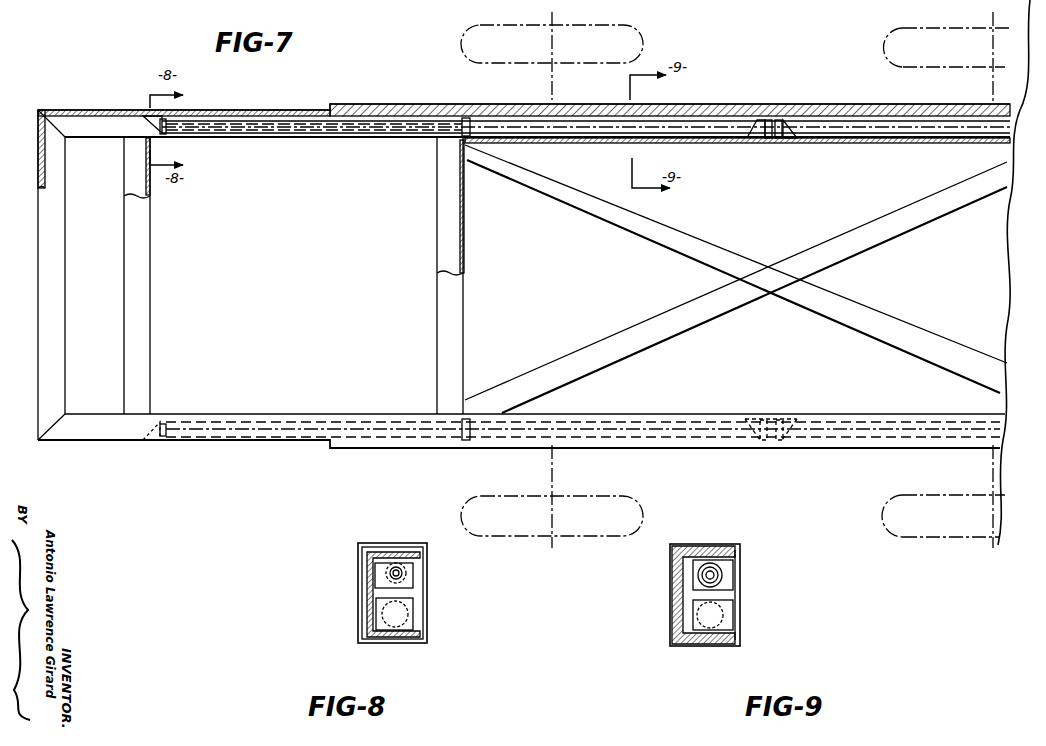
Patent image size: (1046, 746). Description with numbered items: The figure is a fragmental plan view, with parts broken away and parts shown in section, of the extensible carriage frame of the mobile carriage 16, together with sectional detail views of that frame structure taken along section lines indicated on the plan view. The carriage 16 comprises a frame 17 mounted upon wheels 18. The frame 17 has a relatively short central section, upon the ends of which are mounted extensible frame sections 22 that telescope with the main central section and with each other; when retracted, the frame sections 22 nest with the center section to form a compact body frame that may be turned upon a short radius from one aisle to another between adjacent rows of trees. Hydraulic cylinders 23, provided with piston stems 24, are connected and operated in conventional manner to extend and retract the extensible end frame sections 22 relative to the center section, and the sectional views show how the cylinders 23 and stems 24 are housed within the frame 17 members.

In FIG. 7, the mobile carriage 16 is at (789, 94).
In FIG. 7, the frame 17 is at (426, 444).
In FIG. 8, the frame 17 is at (358, 564).
In FIG. 9, the frame 17 is at (670, 593).
In FIG. 7, the wheels 18 is at (464, 50).
In FIG. 7, the extensible frame sections 22 is at (276, 442).
In FIG. 8, the extensible frame sections 22 is at (367, 588).
In FIG. 9, the extensible frame sections 22 is at (683, 620).
In FIG. 7, the hydraulic cylinders 23 is at (876, 127).
In FIG. 8, the hydraulic cylinders 23 is at (412, 575).
In FIG. 9, the hydraulic cylinders 23 is at (722, 580).
In FIG. 7, the piston stems 24 is at (372, 137).